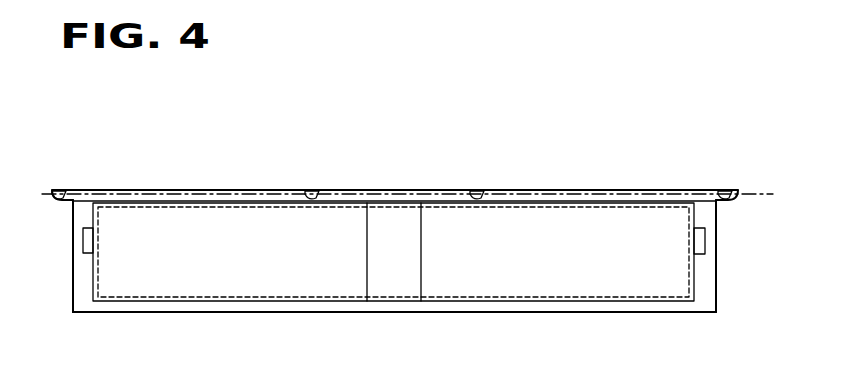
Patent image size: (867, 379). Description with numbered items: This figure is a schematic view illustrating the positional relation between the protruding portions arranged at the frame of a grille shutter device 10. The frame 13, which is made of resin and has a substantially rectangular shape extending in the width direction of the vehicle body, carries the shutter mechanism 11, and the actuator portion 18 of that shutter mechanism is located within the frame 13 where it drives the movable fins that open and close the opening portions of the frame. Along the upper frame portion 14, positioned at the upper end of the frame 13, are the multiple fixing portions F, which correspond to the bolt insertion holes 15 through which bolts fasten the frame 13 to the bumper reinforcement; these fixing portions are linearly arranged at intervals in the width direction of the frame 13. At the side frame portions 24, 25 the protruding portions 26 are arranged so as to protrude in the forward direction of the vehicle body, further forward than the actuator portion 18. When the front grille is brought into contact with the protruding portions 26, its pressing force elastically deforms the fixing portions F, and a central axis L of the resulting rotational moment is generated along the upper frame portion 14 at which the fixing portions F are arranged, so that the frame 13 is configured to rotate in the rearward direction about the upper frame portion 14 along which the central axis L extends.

The battery module / housing assembly 10 is at (92, 112).
The shutter mechanism 11 is at (553, 305).
The frame 13 is at (207, 192).
The upper frame portion 14 is at (618, 200).
The bolt insertion holes 15 is at (57, 188).
The actuator portion 18 is at (392, 287).
The side frame portion 24 is at (707, 277).
The side frame portion 25 is at (83, 276).
The protruding portions 26 is at (83, 238).
The central axis L is at (760, 192).